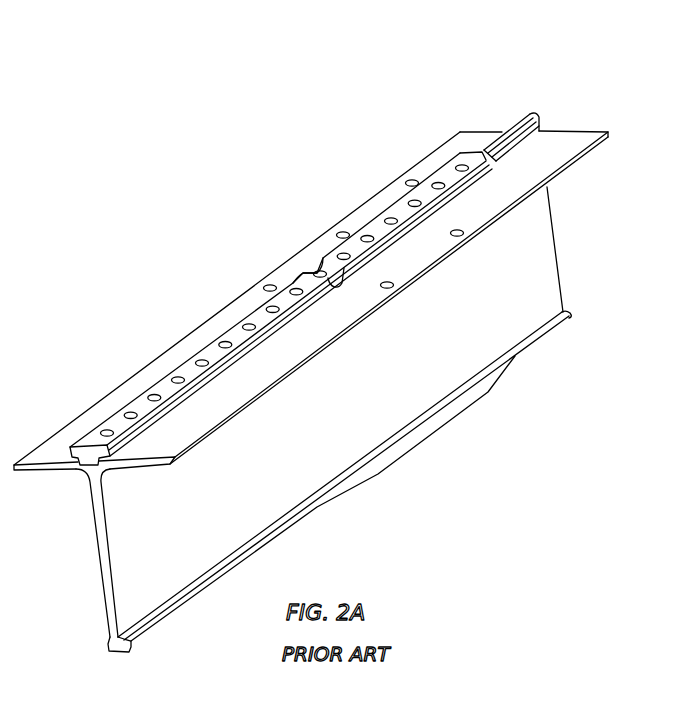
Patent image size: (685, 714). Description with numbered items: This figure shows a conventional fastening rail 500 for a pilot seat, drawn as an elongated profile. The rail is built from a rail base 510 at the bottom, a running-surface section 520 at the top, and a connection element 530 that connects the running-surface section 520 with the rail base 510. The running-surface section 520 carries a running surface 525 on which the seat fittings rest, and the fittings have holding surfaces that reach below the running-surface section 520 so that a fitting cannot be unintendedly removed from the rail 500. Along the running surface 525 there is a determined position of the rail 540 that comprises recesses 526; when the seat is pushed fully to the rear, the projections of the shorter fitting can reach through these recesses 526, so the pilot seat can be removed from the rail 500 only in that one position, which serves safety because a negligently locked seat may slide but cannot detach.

The rail 500 is at (387, 165).
The rail base 510 is at (558, 266).
The running-surface section 520 is at (74, 465).
The running surface 525 is at (158, 388).
The recesses 526 is at (200, 362).
The connection element 530 is at (532, 111).
The determined position of the rail 540 is at (301, 272).